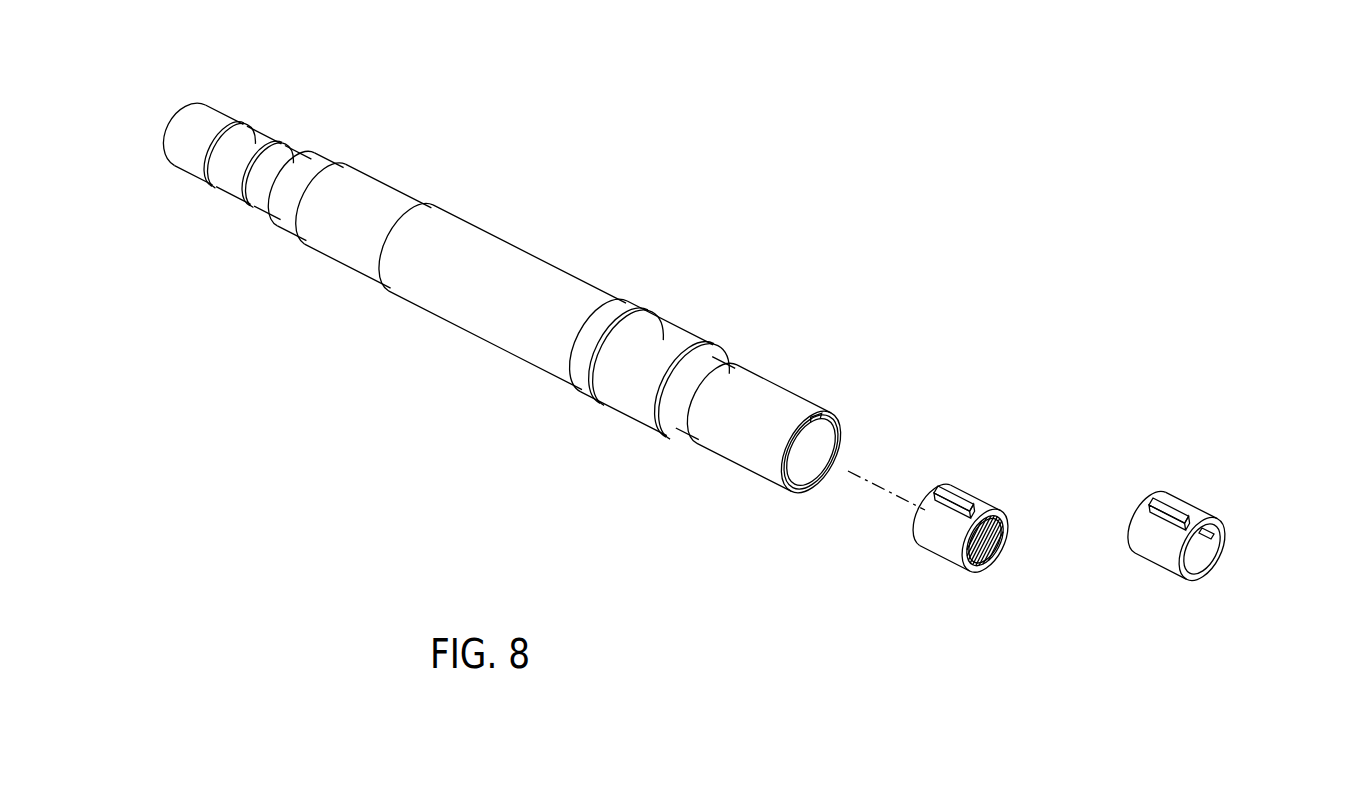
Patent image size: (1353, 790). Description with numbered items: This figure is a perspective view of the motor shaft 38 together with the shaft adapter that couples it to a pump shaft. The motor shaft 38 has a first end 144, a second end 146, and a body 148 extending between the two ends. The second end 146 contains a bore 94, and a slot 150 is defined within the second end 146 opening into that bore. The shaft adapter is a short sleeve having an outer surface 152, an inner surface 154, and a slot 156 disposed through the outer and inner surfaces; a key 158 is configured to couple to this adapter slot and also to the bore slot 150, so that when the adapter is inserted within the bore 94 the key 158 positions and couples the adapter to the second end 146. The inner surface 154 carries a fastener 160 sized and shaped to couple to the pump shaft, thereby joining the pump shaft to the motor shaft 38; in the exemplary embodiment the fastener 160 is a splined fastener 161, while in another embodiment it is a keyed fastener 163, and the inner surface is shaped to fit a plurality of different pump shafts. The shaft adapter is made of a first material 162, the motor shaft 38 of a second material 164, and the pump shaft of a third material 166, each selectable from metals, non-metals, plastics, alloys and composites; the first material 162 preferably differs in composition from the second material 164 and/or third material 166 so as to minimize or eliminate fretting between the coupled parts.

The motor shaft 38 is at (390, 355).
The first end 144 is at (226, 114).
The body 148 is at (488, 250).
The second end 146 is at (778, 386).
The first material 162 is at (743, 453).
The bore 94 is at (818, 443).
The slot 150 is at (822, 420).
The outer surface 152 is at (985, 512).
The inner surface 154 is at (983, 575).
The slot 156 is at (947, 509).
The key 158 is at (953, 495).
The fastener 160 is at (1002, 525).
The splined fastener 161 is at (1003, 551).
The keyed fastener 163 is at (1220, 550).
The second material 164 is at (950, 560).
The third material 166 is at (1167, 558).